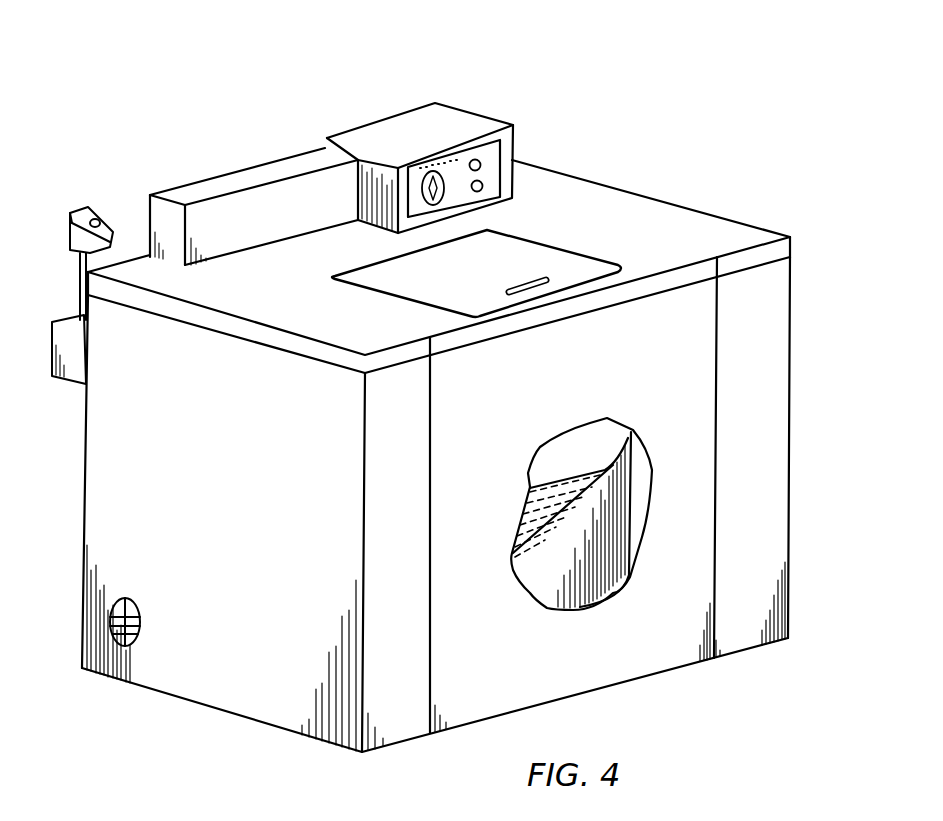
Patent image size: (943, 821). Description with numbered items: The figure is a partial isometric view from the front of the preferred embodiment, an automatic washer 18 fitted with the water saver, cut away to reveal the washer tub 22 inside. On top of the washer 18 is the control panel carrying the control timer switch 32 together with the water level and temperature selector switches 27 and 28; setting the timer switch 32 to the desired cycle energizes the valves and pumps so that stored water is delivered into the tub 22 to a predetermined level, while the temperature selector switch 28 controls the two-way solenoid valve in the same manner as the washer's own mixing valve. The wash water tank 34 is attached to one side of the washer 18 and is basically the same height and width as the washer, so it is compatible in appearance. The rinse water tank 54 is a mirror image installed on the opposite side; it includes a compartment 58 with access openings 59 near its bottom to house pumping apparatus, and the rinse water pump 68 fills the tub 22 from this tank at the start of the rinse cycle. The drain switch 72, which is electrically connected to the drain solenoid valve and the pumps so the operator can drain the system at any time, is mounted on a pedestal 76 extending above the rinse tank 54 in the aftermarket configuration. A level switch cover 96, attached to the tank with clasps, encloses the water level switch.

The automatic washer 18 is at (622, 682).
The washer tub 22 is at (630, 487).
The water level selector switch 27 is at (480, 160).
The temperature selector switch 28 is at (483, 186).
The control timer switch 32 is at (428, 180).
The wash water tank 34 is at (786, 565).
The rinse water tank 54 is at (293, 733).
The compartment 58 is at (110, 625).
The access openings 59 is at (140, 623).
The rinse water pump 68 is at (127, 647).
The drain switch 72 is at (100, 217).
The pedestal 76 is at (78, 284).
The level switch cover 96 is at (63, 383).